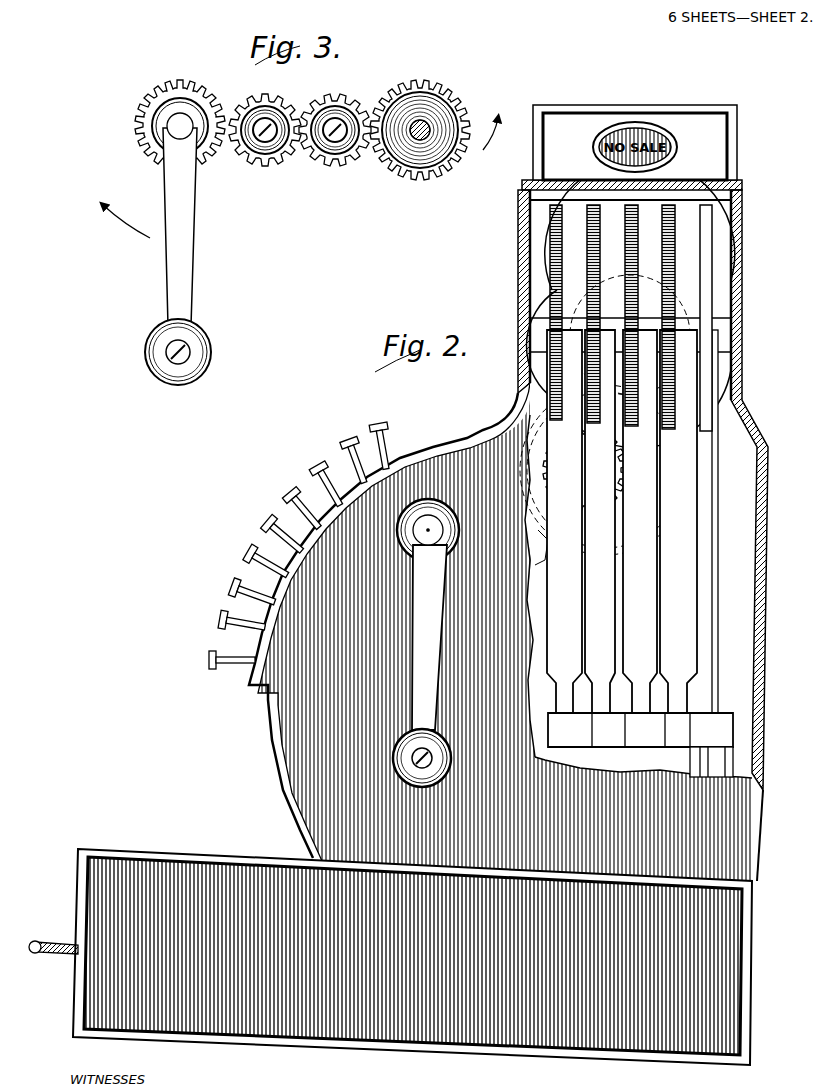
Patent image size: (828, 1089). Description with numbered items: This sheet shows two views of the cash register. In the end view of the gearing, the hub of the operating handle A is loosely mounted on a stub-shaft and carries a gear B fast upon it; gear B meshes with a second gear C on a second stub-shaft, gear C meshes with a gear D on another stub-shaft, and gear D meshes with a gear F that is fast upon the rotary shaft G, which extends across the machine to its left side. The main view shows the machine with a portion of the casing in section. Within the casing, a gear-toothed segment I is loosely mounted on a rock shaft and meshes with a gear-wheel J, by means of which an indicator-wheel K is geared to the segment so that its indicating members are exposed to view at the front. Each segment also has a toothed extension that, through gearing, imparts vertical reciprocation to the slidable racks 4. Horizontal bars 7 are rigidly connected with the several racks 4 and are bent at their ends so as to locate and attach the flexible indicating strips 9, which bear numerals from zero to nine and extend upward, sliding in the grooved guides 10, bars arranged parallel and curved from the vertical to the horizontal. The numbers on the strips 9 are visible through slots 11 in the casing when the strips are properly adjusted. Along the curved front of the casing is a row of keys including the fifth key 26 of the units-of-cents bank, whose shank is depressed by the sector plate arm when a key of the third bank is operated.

In FIG. 3, the operating handle A is at (184, 250).
In FIG. 2, the operating handle A is at (410, 618).
In FIG. 3, the gear B is at (150, 104).
In FIG. 3, the second gear C is at (270, 168).
In FIG. 3, the gear D is at (335, 168).
In FIG. 3, the gear F is at (405, 182).
In FIG. 3, the rotary shaft G is at (430, 128).
In FIG. 2, the indicator-wheel K is at (535, 306).
In FIG. 2, the gear-wheel J is at (538, 418).
In FIG. 2, the gear-toothed segment I is at (536, 547).
In FIG. 2, the grooved guides 10 is at (714, 262).
In FIG. 2, the slots 11 is at (738, 338).
In FIG. 2, the flexible indicating strips 9 is at (740, 585).
In FIG. 2, the horizontal bars 7 is at (598, 753).
In FIG. 2, the slidable racks 4 is at (685, 758).
In FIG. 2, the fifth key 26 is at (270, 510).